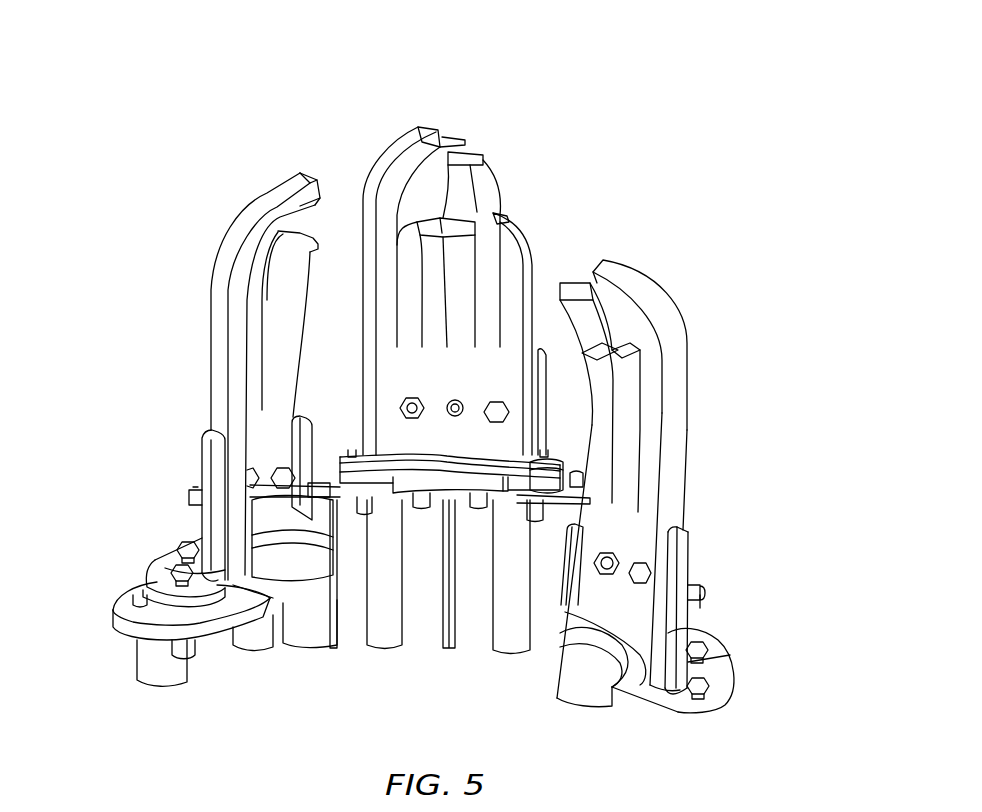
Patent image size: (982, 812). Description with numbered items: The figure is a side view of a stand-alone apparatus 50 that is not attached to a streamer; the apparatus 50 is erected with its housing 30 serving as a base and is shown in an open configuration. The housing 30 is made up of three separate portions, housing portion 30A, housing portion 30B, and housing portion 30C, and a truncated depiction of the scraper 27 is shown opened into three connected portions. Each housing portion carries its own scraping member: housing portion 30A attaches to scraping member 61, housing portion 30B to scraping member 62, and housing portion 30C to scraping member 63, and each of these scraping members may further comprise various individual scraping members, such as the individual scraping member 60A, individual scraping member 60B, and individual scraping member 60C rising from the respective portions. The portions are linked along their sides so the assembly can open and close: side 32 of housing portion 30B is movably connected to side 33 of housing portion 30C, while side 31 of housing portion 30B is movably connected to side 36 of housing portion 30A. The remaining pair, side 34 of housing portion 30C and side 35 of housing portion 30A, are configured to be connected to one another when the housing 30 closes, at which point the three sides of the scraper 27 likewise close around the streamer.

The apparatus 50 is at (618, 60).
The scraping member 62 is at (416, 98).
The scraping member 63 is at (261, 148).
The scraping member 61 is at (643, 260).
The individual scraping member 60A is at (640, 352).
The individual scraping member 60B is at (410, 145).
The individual scraping member 60C is at (222, 313).
The housing 30 is at (755, 607).
The housing portion 30A is at (724, 574).
The housing portion 30B is at (545, 338).
The housing portion 30C is at (185, 526).
The side 31 is at (535, 452).
The side 32 is at (350, 447).
The side 33 is at (316, 437).
The side 34 is at (135, 565).
The side 35 is at (735, 650).
The side 36 is at (583, 425).
The scraper 27 is at (522, 702).